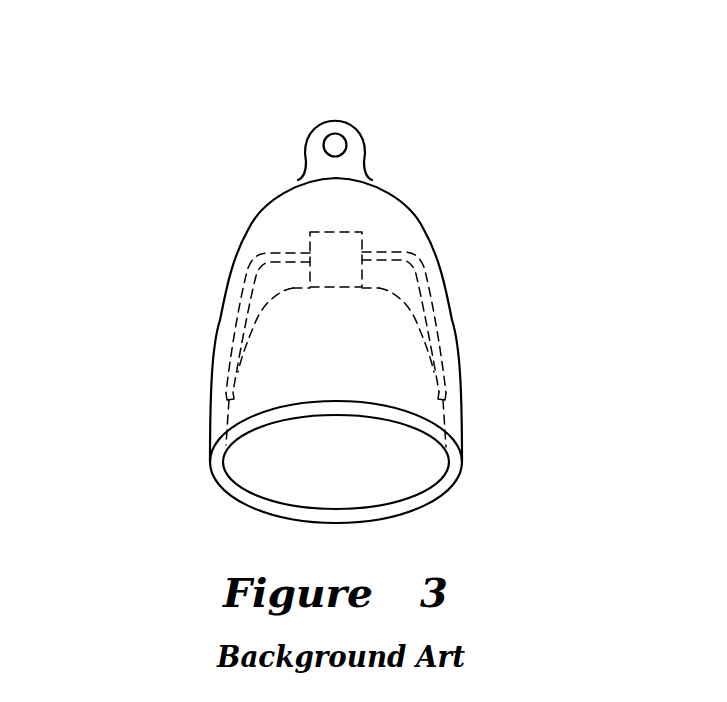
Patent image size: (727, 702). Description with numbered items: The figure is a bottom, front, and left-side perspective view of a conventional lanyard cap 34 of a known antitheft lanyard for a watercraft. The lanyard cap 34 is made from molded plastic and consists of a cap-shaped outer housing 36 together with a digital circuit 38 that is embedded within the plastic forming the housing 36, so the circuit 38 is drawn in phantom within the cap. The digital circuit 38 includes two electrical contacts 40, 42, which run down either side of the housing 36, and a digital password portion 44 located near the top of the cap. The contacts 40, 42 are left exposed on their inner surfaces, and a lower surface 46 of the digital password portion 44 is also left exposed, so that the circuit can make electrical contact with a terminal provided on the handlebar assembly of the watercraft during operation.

The lanyard cap 34 is at (143, 88).
The cap-shaped outer housing 36 is at (250, 228).
The digital circuit 38 is at (381, 213).
The electrical contact 40 is at (230, 374).
The electrical contact 42 is at (442, 373).
The digital password portion 44 is at (362, 248).
The lower surface 46 is at (335, 290).